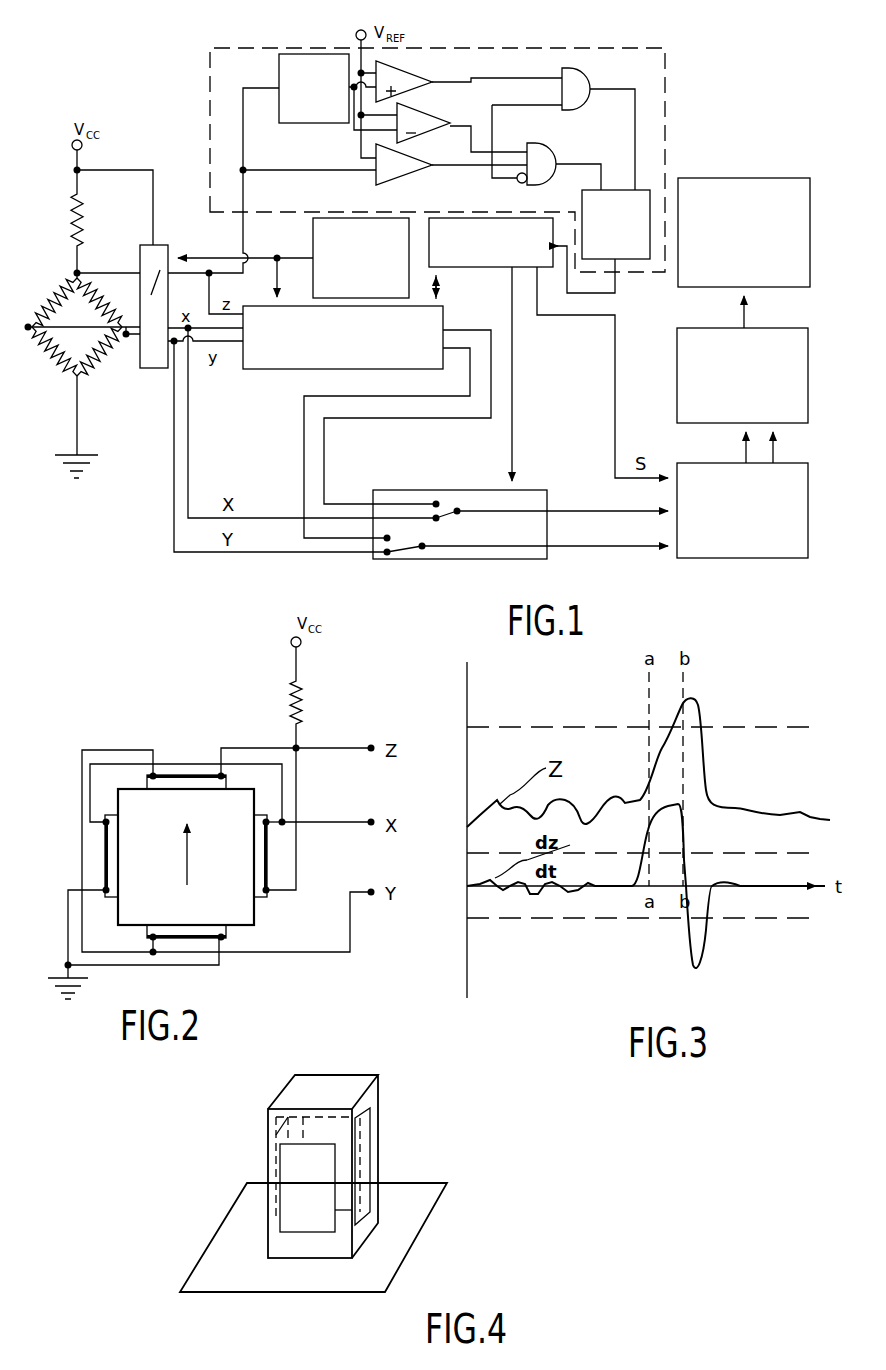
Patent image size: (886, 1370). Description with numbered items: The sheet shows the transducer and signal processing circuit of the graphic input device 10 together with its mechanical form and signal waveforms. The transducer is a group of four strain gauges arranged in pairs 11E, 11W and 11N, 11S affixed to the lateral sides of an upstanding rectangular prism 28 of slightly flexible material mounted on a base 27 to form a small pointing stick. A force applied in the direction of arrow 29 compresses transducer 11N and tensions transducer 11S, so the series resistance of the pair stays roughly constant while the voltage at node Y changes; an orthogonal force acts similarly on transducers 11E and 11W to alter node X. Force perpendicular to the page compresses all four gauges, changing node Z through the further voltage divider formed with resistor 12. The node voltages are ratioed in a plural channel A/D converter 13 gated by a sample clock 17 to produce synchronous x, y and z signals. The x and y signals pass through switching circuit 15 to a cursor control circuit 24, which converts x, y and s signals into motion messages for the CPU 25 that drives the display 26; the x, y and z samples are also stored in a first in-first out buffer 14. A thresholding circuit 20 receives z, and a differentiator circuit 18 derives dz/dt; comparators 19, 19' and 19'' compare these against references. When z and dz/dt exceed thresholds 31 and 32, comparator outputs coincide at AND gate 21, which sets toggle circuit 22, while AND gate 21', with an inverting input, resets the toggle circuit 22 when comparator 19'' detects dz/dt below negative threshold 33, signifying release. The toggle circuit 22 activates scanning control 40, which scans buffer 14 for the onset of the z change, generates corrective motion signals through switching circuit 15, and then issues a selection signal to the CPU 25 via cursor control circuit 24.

In FIG. 1, the pointing device system 10 is at (752, 117).
In FIG. 1, the strain gauge 11E is at (58, 282).
In FIG. 2, the strain gauge 11E is at (270, 866).
In FIG. 4, the strain gauge 11E is at (372, 1135).
In FIG. 1, the strain gauge 11N is at (107, 284).
In FIG. 2, the strain gauge 11N is at (187, 774).
In FIG. 4, the strain gauge 11N is at (335, 1117).
In FIG. 1, the strain gauge 11W is at (58, 362).
In FIG. 2, the strain gauge 11W is at (104, 862).
In FIG. 4, the strain gauge 11W is at (278, 1128).
In FIG. 1, the strain gauge 11S is at (95, 360).
In FIG. 2, the strain gauge 11S is at (207, 939).
In FIG. 4, the strain gauge 11S is at (305, 1218).
In FIG. 1, the resistor 12 is at (87, 214).
In FIG. 1, the A/D converter 13 is at (160, 245).
In FIG. 1, the buffer 14 is at (278, 370).
In FIG. 1, the switching circuit 15 is at (442, 560).
In FIG. 1, the sample clock 17 is at (361, 258).
In FIG. 1, the differentiator circuit 18 is at (281, 62).
In FIG. 1, the comparator 19 is at (419, 76).
In FIG. 1, the comparator 19' is at (422, 172).
In FIG. 1, the comparator 19'' is at (436, 116).
In FIG. 1, the thresholding circuit 20 is at (208, 78).
In FIG. 1, the AND gate 21 is at (598, 82).
In FIG. 1, the AND gate 21' is at (557, 156).
In FIG. 1, the toggle circuit 22 is at (654, 186).
In FIG. 1, the cursor control circuit 24 is at (756, 559).
In FIG. 1, the CPU 25 is at (810, 411).
In FIG. 1, the display 26 is at (812, 256).
In FIG. 4, the base 27 is at (435, 1222).
In FIG. 2, the rectangular prism 28 is at (256, 915).
In FIG. 4, the rectangular prism 28 is at (380, 1100).
In FIG. 2, the arrow 29 is at (184, 868).
In FIG. 3, the threshold 31 is at (768, 727).
In FIG. 3, the threshold 32 is at (778, 853).
In FIG. 3, the negative threshold 33 is at (775, 918).
In FIG. 1, the scanning control 40 is at (455, 268).